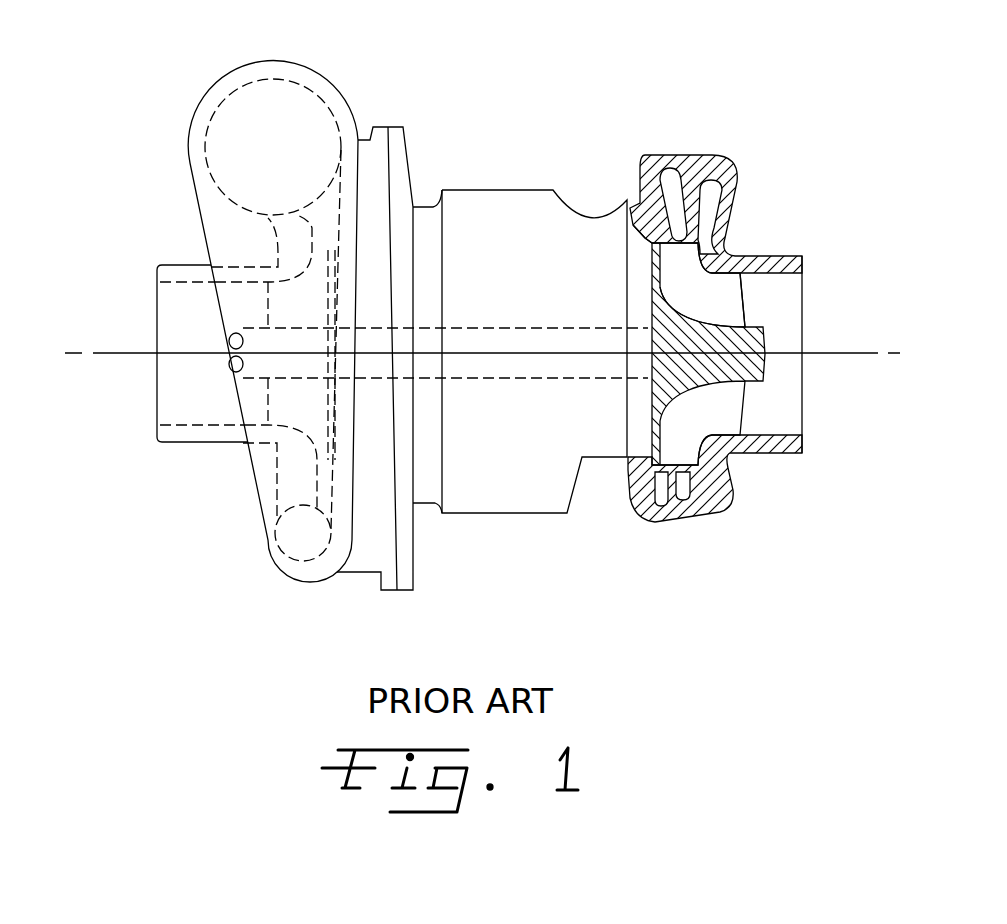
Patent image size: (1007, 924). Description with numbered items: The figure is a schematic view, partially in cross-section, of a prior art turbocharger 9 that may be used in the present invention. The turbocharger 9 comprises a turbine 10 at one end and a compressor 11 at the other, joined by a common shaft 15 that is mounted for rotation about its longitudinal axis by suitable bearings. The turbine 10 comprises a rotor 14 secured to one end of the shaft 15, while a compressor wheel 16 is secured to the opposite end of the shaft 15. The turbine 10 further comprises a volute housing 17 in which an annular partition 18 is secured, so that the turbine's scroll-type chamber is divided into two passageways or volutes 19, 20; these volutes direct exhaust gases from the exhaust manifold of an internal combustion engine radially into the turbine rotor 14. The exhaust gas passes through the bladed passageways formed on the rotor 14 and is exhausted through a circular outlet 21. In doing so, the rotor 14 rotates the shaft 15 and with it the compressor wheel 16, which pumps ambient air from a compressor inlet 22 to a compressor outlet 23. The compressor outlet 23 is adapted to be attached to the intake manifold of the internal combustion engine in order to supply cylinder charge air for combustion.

The turbocharger 9 is at (732, 273).
The turbine 10 is at (776, 243).
The compressor 11 is at (178, 176).
The rotor 14 is at (726, 293).
The shaft 15 is at (533, 328).
The compressor wheel 16 is at (327, 245).
The volute housing 17 is at (743, 180).
The annular partition 18 is at (650, 228).
The passageway or volute 19 is at (667, 180).
The passageway or volute 20 is at (708, 190).
The circular outlet 21 is at (803, 342).
The compressor inlet 22 is at (146, 426).
The compressor outlet 23 is at (229, 78).